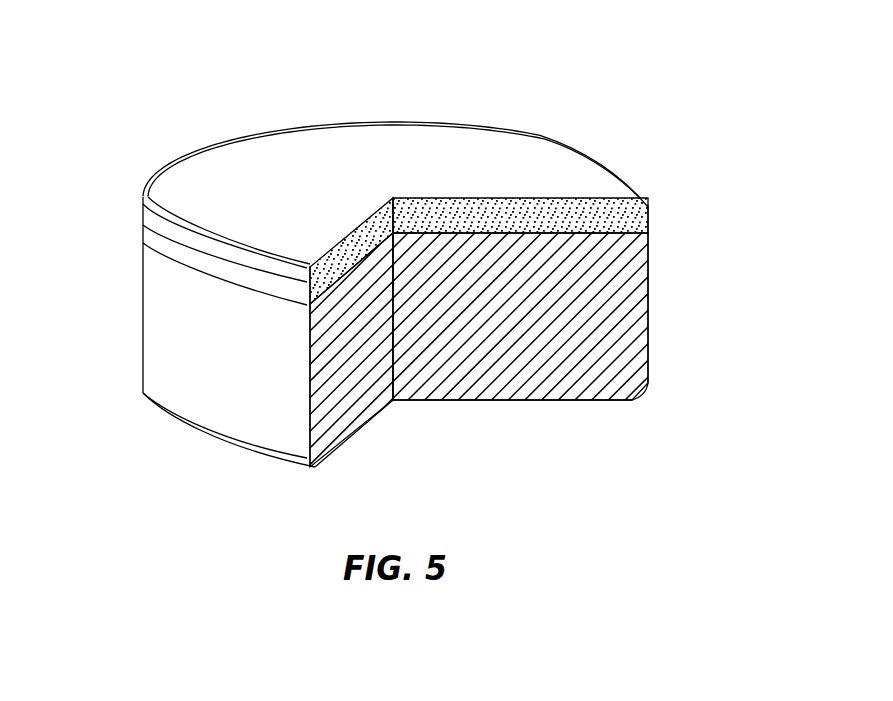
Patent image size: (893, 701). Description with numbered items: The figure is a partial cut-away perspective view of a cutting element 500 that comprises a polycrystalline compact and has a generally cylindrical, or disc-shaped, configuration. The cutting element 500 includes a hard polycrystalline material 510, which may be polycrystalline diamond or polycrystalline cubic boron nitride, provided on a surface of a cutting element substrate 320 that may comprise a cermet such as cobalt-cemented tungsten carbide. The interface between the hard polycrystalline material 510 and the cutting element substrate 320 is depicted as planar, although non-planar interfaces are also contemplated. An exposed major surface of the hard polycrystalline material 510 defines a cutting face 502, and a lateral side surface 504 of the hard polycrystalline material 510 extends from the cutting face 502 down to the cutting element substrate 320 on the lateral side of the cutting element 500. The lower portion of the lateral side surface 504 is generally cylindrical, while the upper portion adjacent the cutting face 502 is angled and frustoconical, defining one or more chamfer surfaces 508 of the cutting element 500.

The cutting element 500 is at (200, 87).
The cutting face 502 is at (491, 148).
The hard polycrystalline material 510 is at (568, 168).
The chamfer surfaces 508 is at (152, 212).
The lateral side surface 504 is at (636, 220).
The cutting element substrate 320 is at (623, 306).